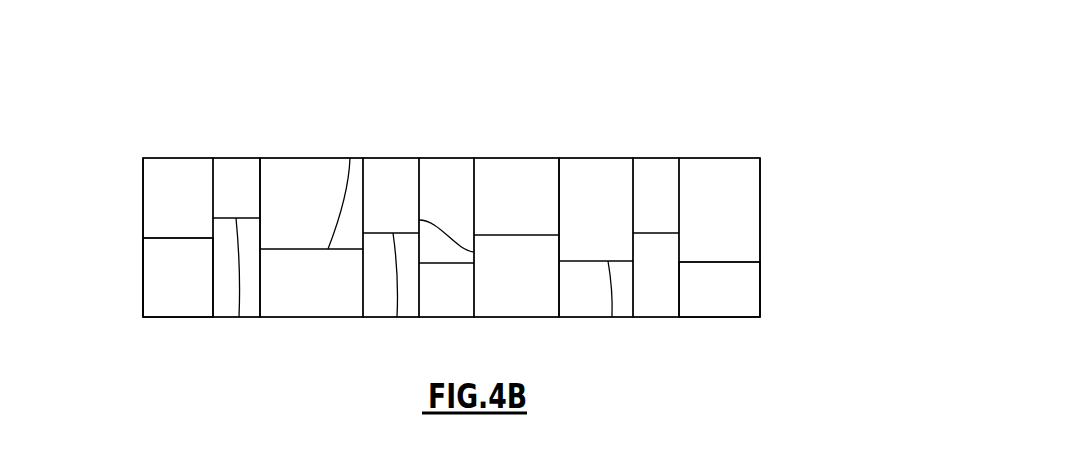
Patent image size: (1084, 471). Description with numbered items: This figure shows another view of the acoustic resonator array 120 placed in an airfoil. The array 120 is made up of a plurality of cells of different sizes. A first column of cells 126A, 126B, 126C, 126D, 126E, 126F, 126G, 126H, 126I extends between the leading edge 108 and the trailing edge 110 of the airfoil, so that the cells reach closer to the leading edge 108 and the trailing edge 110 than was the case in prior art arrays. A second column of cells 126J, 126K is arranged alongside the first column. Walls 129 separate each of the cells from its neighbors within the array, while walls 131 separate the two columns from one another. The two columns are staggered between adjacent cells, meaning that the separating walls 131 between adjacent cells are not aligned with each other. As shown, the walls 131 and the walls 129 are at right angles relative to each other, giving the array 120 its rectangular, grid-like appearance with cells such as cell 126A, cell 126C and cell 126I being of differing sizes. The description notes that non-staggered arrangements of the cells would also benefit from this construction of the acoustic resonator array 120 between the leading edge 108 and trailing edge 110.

The leading edge 108 is at (143, 211).
The trailing edge 110 is at (760, 208).
The acoustic resonator array 120 is at (490, 82).
The cell 126A is at (162, 170).
The cell 126B is at (233, 172).
The cell 126C is at (282, 173).
The cell 126D is at (408, 168).
The cell 126E is at (448, 175).
The cell 126F is at (535, 170).
The cell 126G is at (573, 170).
The cell 126H is at (657, 173).
The cell 126I is at (709, 175).
The cell 126J is at (160, 305).
The cell 126K is at (709, 300).
The wall 129 is at (260, 172).
The wall 131 is at (351, 158).